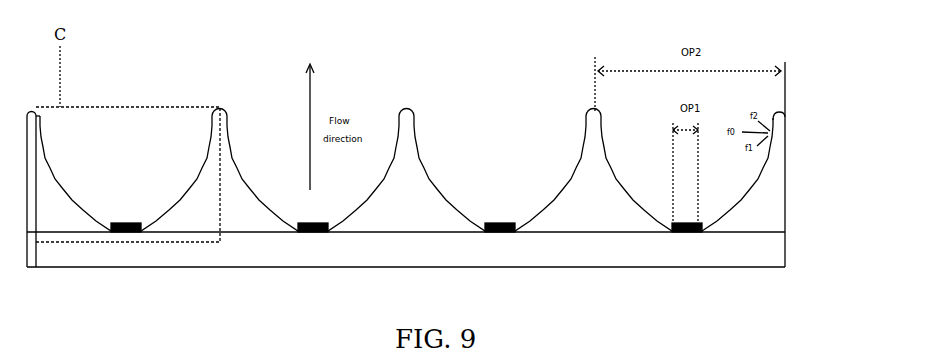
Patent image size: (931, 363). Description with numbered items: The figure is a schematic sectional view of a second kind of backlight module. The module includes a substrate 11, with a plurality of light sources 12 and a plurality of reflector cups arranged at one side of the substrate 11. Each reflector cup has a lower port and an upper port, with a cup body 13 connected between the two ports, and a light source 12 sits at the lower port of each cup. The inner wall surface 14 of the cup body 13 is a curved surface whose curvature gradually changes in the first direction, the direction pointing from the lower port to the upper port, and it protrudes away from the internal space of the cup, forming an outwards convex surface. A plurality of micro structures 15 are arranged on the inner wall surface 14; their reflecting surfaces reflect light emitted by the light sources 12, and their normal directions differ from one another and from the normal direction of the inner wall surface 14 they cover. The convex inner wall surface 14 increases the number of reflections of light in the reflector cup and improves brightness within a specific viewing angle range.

The substrate 11 is at (740, 250).
The light source 12 is at (687, 232).
The cup body 13 is at (765, 203).
The inner wall surface 14 is at (762, 165).
The micro structure 15 is at (774, 136).